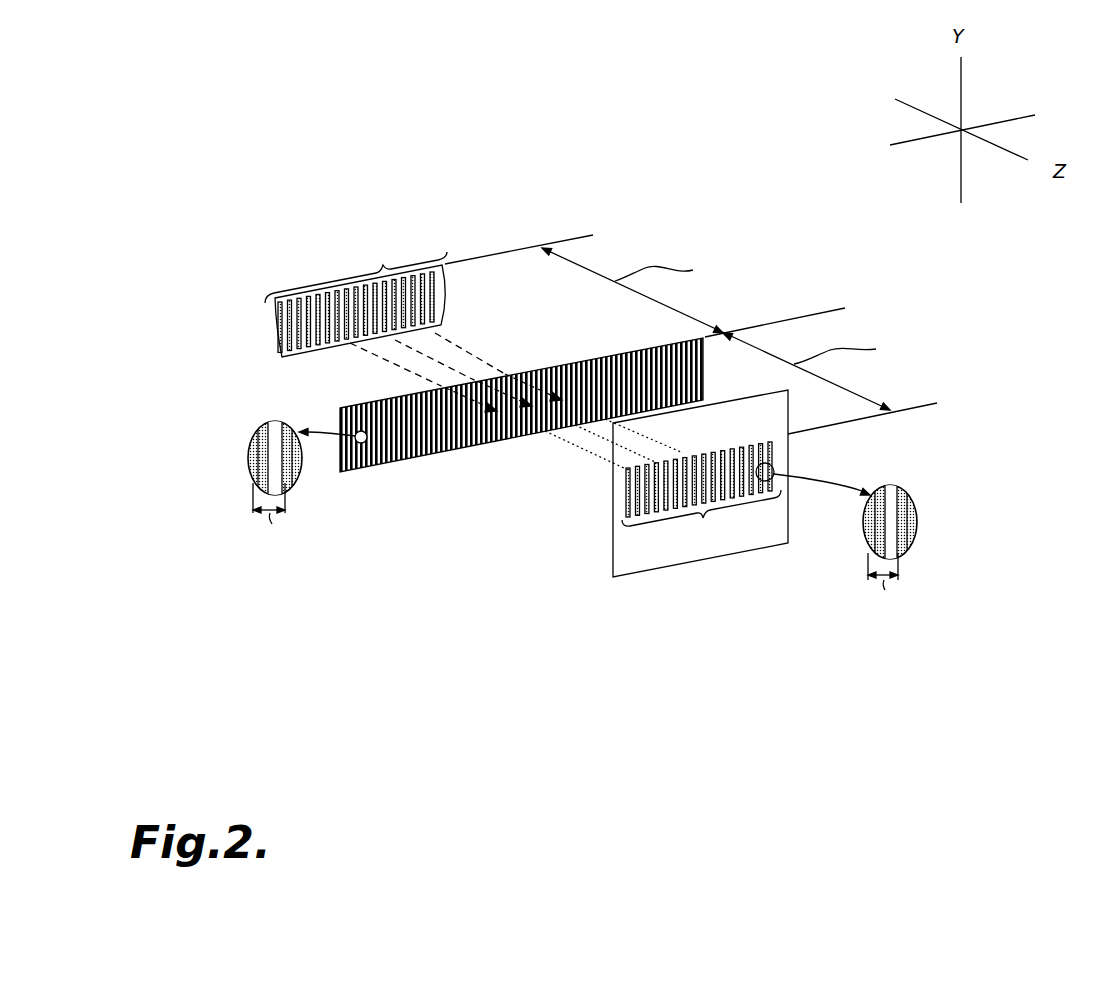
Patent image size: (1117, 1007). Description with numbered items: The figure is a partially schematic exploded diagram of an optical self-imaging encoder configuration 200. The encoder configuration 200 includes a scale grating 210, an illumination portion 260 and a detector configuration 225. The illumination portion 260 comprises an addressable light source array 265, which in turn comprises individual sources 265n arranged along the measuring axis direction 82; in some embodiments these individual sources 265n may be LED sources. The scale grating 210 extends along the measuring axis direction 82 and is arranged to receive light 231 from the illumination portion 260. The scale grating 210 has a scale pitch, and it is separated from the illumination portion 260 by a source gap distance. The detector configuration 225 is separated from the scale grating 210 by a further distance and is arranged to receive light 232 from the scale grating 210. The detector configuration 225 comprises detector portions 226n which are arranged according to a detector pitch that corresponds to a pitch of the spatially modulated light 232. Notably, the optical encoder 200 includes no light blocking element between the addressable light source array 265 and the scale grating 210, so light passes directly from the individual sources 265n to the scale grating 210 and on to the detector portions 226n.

The optical self-imaging encoder configuration 200 is at (980, 270).
The measuring axis direction 82 is at (995, 127).
The illumination portion 260 is at (350, 273).
The addressable light source array 265 is at (266, 331).
The individual sources 265n is at (356, 280).
The light 231 is at (370, 363).
The scale grating 210 is at (586, 359).
The light 232 is at (560, 461).
The detector configuration 225 is at (645, 574).
The detector portions 226n is at (703, 518).